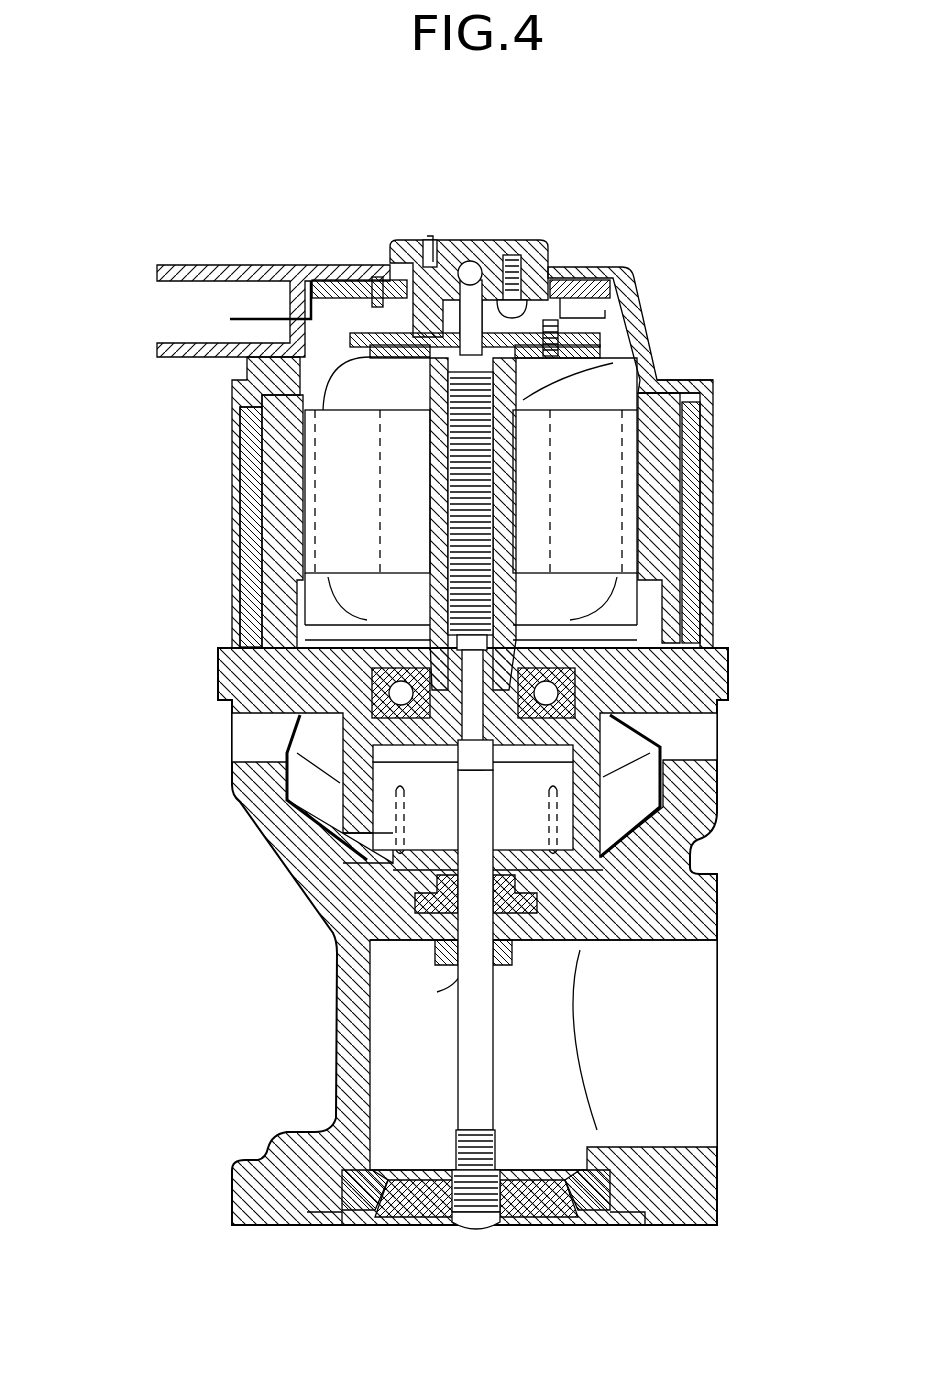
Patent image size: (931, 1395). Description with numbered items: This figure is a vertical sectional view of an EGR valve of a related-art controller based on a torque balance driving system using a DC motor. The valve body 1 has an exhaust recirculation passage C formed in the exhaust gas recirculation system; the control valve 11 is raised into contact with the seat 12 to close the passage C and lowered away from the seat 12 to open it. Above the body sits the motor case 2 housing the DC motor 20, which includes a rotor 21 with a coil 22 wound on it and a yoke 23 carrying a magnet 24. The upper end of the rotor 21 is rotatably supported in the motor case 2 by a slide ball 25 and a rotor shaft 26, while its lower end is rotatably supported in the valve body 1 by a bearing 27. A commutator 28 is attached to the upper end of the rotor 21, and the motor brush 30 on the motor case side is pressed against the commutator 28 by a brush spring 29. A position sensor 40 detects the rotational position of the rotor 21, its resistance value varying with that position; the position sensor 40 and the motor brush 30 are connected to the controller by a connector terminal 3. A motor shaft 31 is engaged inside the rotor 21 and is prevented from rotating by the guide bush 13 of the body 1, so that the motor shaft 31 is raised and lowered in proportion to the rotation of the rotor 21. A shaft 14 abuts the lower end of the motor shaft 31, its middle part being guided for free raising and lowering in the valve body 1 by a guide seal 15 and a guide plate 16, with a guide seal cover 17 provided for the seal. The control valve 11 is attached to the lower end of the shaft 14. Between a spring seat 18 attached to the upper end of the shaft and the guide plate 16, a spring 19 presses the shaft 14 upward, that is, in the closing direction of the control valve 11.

The valve body 1 is at (667, 828).
The motor case 2 is at (193, 265).
The connector terminal 3 is at (230, 317).
The control valve 11 is at (415, 1212).
The seat 12 is at (603, 1212).
The guide bush 13 is at (657, 725).
The shaft 14 is at (482, 1085).
The guide seal 15 is at (633, 945).
The guide plate 16 is at (650, 907).
The guide seal cover 17 is at (437, 992).
The spring seat 18 is at (343, 748).
The spring 19 is at (398, 842).
The DC motor 20 is at (616, 362).
The rotor 21 is at (633, 377).
The coil 22 is at (595, 460).
The yoke 23 is at (250, 460).
The magnet 24 is at (292, 548).
The slide ball 25 is at (477, 262).
The rotor shaft 26 is at (497, 270).
The bearing 27 is at (690, 688).
The commutator 28 is at (350, 348).
The brush spring 29 is at (432, 258).
The motor brush 30 is at (405, 283).
The motor shaft 31 is at (497, 518).
The position sensor 40 is at (572, 280).
The exhaust recirculation passage C is at (700, 1103).